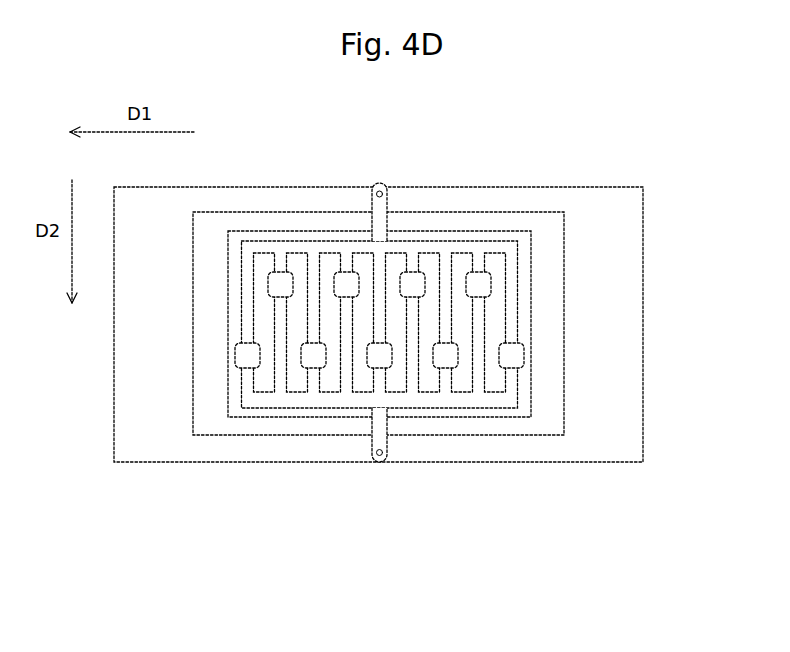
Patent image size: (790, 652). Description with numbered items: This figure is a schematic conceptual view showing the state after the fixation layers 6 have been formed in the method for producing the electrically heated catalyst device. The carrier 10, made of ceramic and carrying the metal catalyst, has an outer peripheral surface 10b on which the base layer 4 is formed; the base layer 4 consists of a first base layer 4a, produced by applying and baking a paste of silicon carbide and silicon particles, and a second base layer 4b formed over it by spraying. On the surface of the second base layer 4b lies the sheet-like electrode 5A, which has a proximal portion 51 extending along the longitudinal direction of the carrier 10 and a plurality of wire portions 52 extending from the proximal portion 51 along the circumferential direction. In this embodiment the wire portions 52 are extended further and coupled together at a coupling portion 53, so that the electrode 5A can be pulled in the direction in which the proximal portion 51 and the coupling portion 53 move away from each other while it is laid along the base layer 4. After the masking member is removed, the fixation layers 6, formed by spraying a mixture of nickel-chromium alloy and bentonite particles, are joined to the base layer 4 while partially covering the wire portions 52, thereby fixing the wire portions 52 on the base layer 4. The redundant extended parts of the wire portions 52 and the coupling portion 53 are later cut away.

The base layer 4 is at (583, 137).
The first base layer 4a is at (557, 225).
The second base layer 4b is at (524, 245).
The electrode 5A is at (389, 186).
The fixation layer 6 is at (280, 284).
The carrier 10 is at (636, 335).
The outer peripheral surface 10b is at (167, 203).
The proximal portion 51 is at (318, 238).
The wire portion 52 is at (314, 260).
The coupling portion 53 is at (428, 402).